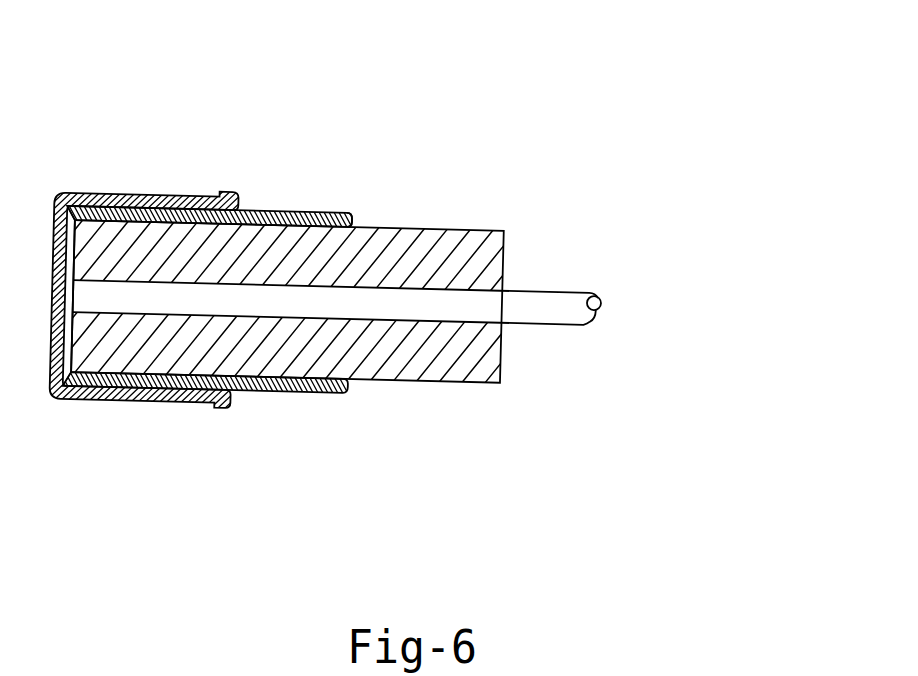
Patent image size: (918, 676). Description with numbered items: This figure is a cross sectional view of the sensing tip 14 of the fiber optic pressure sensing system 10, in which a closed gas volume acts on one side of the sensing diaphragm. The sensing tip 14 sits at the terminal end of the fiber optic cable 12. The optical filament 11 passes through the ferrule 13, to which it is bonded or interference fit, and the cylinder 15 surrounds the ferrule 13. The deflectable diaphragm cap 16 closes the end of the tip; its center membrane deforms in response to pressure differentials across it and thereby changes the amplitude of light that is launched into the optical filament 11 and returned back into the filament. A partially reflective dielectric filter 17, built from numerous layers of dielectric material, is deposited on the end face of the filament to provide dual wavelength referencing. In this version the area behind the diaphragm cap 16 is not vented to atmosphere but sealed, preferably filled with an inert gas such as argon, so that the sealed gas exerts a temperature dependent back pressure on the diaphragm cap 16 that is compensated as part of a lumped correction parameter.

The fiber optic pressure sensing system 10 is at (209, 102).
The optical filament 11 is at (547, 292).
The fiber optic cable 12 is at (354, 185).
The ferrule 13 is at (398, 231).
The sensing tip 14 is at (308, 183).
The cylinder 15 is at (292, 395).
The deflectable diaphragm cap 16 is at (53, 352).
The partially reflective dielectric filter 17 is at (72, 306).